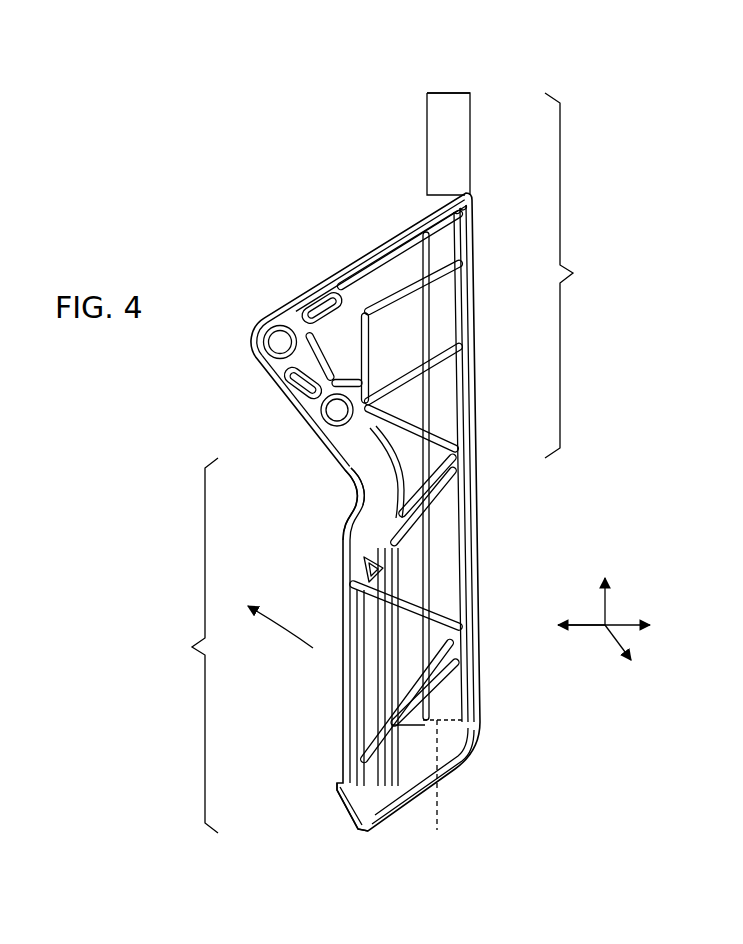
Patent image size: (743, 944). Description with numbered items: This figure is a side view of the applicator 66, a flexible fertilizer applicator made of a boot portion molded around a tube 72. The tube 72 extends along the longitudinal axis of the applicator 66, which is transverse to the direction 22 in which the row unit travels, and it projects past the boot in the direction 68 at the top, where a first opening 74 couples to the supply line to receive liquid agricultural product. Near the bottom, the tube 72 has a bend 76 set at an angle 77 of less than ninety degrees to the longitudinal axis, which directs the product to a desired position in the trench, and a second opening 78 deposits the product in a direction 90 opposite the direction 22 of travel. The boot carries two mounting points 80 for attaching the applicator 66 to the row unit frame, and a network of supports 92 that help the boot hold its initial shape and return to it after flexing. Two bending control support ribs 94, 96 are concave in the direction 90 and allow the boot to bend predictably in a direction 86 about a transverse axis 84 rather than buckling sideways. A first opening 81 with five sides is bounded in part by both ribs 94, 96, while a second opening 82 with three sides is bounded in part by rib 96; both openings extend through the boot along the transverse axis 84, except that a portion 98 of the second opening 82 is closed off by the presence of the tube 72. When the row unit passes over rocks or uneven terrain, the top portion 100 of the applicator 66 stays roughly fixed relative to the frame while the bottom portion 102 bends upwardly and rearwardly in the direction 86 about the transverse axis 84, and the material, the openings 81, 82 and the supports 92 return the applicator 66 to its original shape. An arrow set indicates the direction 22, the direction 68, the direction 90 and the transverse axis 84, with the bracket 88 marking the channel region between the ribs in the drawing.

The direction of travel 22 is at (625, 622).
The applicator 66 is at (317, 156).
The direction 68 is at (605, 606).
The tube portion 72 is at (455, 150).
The first opening 74 is at (448, 93).
The bend 76 is at (451, 729).
The angle 77 is at (433, 818).
The second opening 78 is at (355, 812).
The mounting points 80 is at (280, 344).
The first opening 81 is at (362, 565).
The second opening 82 is at (413, 492).
The transverse axis 84 is at (618, 640).
The bending direction 86 is at (282, 634).
The channel 88 is at (344, 494).
The direction opposite travel 90 is at (585, 626).
The supports 92 is at (442, 381).
The bending control support rib 94 is at (348, 470).
The bending control support rib 96 is at (355, 484).
The portion of second opening 98 is at (420, 470).
The top portion 100 is at (583, 275).
The bottom portion 102 is at (185, 645).